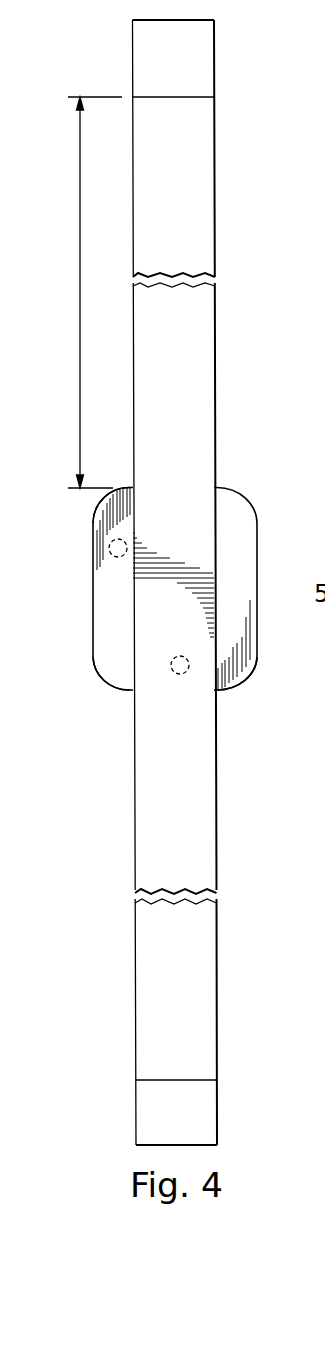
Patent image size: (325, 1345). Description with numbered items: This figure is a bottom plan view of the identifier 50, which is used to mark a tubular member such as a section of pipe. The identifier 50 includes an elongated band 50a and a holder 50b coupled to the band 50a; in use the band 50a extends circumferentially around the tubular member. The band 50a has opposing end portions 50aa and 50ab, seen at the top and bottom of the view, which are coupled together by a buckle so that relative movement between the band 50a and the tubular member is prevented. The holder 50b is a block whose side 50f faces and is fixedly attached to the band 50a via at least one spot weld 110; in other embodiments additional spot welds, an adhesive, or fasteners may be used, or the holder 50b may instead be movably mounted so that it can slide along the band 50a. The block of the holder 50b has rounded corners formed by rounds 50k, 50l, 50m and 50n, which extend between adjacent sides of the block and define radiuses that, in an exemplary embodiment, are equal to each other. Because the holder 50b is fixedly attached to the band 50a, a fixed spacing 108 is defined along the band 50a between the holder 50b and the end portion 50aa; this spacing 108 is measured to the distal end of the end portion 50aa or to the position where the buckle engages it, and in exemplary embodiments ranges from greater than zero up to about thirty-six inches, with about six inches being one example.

The identifier 50 is at (133, 803).
The band 50a is at (205, 185).
The end portion 50aa is at (205, 67).
The end portion 50ab is at (145, 1111).
The holder 50b is at (94, 562).
The side 50f is at (103, 617).
The round 50k is at (245, 680).
The round 50l is at (107, 680).
The round 50m is at (103, 497).
The round 50n is at (243, 497).
The fixed spacing 108 is at (80, 293).
The spot weld 110 is at (190, 672).